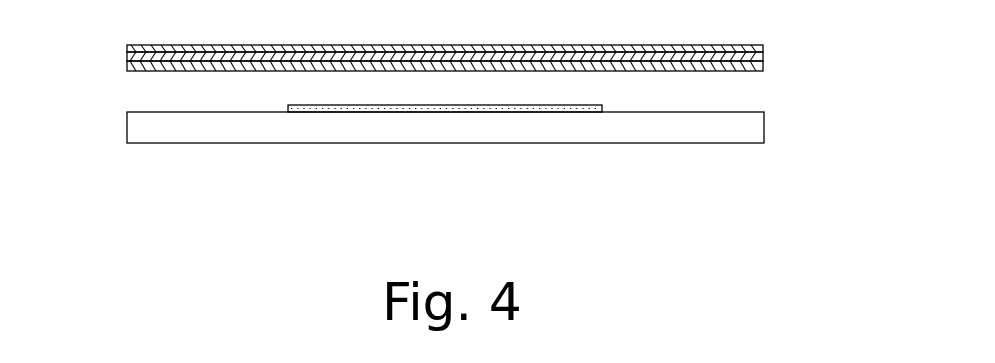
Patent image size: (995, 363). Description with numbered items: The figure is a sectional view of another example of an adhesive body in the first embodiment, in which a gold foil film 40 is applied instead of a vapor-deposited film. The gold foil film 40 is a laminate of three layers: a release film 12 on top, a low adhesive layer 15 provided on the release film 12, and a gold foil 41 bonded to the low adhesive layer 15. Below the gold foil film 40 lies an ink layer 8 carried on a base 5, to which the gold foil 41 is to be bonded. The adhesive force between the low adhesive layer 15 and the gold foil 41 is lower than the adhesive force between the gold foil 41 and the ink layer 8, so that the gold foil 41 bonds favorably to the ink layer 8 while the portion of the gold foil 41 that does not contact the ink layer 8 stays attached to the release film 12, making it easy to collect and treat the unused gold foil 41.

The gold foil film 40 is at (448, 71).
The release film 12 is at (127, 49).
The low adhesive layer 15 is at (127, 57).
The gold foil 41 is at (127, 66).
The ink layer 8 is at (603, 111).
The substrate 5 is at (764, 122).